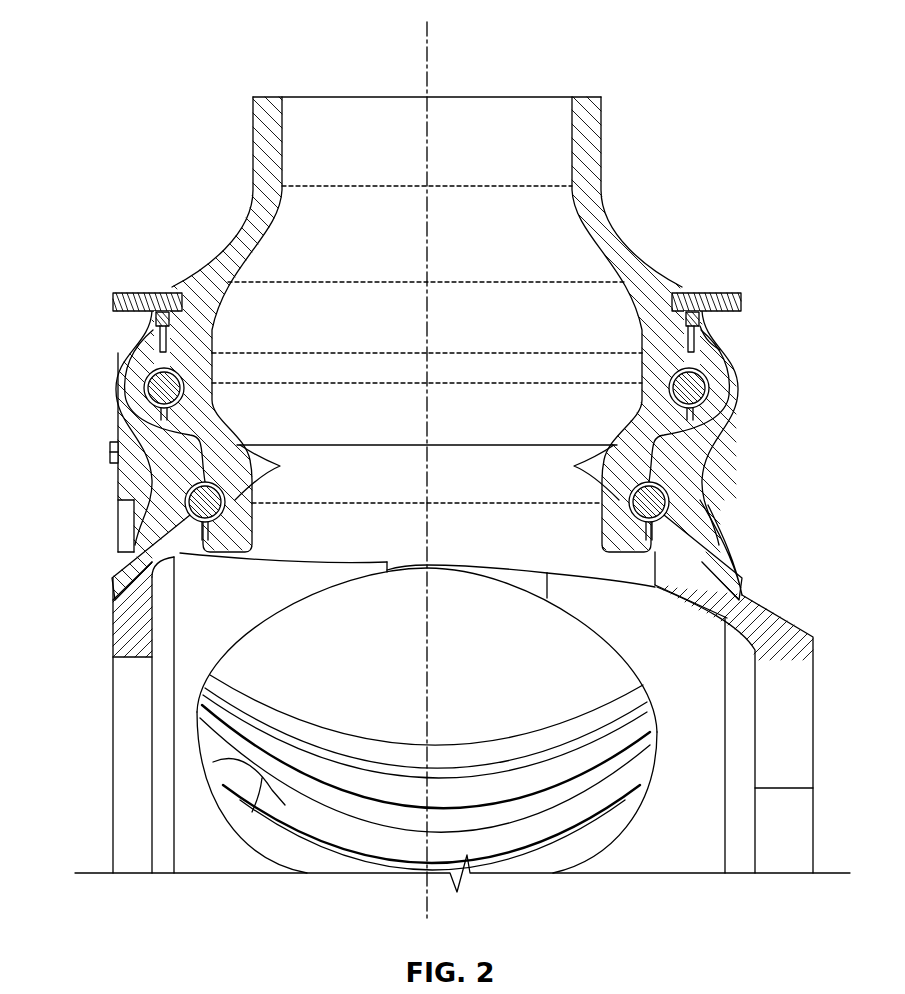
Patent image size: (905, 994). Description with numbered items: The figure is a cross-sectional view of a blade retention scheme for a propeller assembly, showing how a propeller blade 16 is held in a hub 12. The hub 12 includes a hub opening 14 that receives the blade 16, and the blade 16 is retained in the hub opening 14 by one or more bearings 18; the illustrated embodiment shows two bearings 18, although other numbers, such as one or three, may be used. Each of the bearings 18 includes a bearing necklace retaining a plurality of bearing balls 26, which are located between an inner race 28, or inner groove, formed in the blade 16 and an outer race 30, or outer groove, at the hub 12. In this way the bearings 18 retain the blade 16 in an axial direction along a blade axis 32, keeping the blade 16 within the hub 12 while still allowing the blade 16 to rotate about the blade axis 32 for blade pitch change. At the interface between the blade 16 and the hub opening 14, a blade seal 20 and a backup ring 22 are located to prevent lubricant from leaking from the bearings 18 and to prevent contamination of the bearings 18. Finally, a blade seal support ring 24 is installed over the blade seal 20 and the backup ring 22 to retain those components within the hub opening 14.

The hub 12 is at (125, 605).
The hub opening 14 is at (185, 447).
The propeller blade 16 is at (268, 136).
The bearings 18 is at (145, 383).
The blade seal 20 is at (692, 345).
The backup ring 22 is at (698, 318).
The blade seal support ring 24 is at (716, 292).
The bearing balls 26 is at (712, 398).
The inner race 28 is at (280, 466).
The outer race 30 is at (145, 400).
The blade axis 32 is at (430, 34).